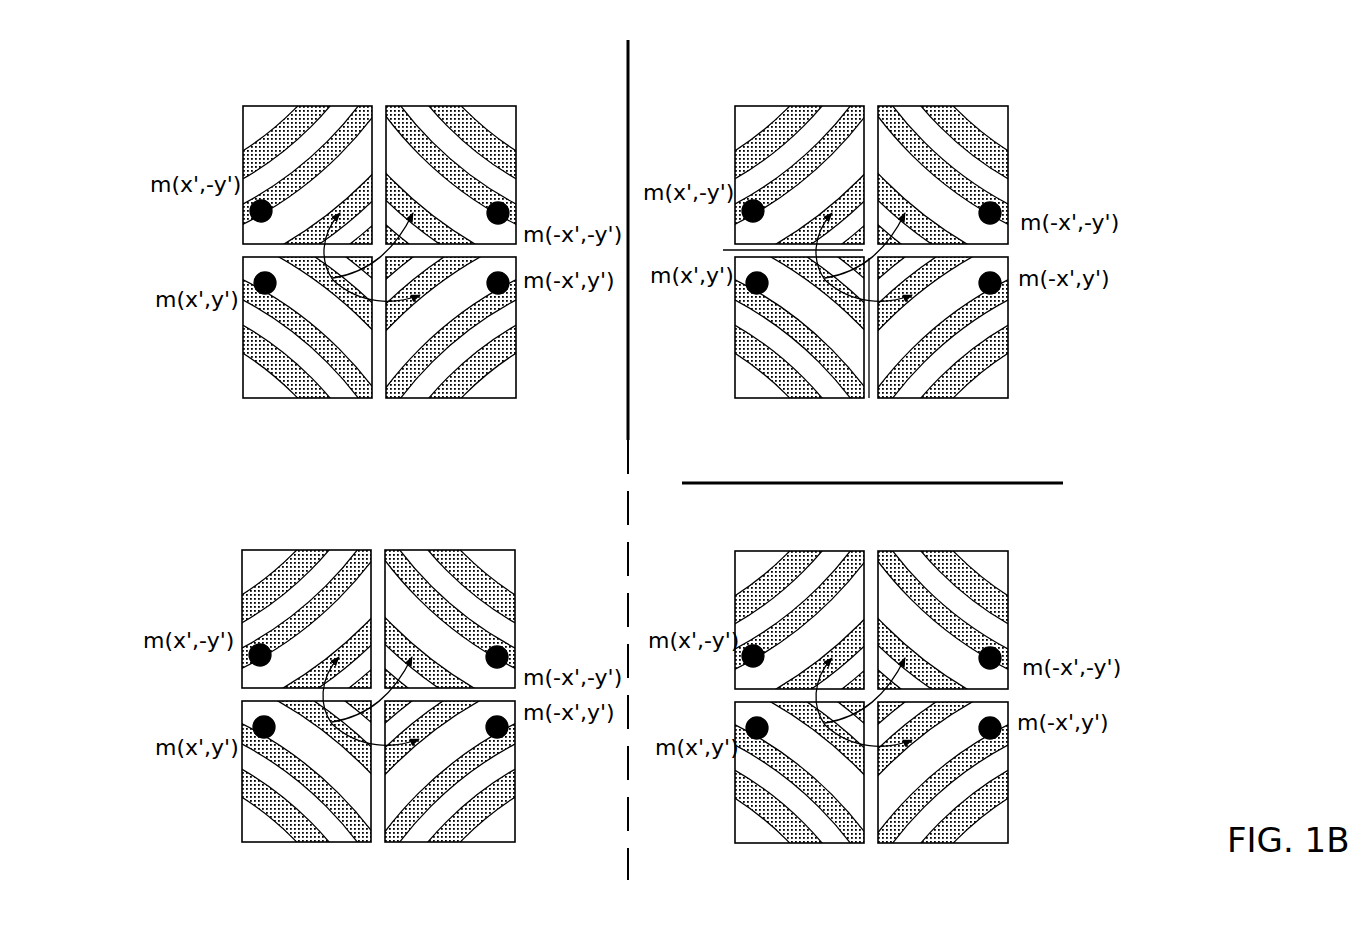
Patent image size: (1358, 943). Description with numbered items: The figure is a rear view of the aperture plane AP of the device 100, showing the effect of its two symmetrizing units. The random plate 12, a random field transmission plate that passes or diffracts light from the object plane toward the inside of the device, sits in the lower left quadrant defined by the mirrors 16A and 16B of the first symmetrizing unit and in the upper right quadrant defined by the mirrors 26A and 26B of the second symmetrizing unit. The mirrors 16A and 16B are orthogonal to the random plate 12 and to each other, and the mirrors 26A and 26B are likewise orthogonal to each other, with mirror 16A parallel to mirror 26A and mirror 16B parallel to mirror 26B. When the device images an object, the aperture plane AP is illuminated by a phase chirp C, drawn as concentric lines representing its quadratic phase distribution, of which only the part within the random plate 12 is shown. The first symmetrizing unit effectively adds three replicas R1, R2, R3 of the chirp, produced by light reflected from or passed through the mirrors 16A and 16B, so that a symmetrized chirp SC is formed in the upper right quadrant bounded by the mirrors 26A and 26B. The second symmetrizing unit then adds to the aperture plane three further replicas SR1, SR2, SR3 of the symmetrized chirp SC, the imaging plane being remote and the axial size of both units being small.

The device 100 is at (735, 471).
The random plate 12 is at (570, 548).
The mirror 16A is at (723, 250).
The mirror 16B is at (869, 398).
The mirror 26A is at (1028, 482).
The mirror 26B is at (630, 75).
The aperture plane AP is at (362, 68).
The symmetrized chirp SC is at (735, 471).
The phase chirp C is at (570, 548).
The replica R1 is at (570, 175).
The replica R2 is at (1036, 175).
The replica R3 is at (1036, 548).
The replica of the symmetrized chirp SR1 is at (569, 471).
The replica of the symmetrized chirp SR2 is at (272, 843).
The replica of the symmetrized chirp SR3 is at (988, 843).